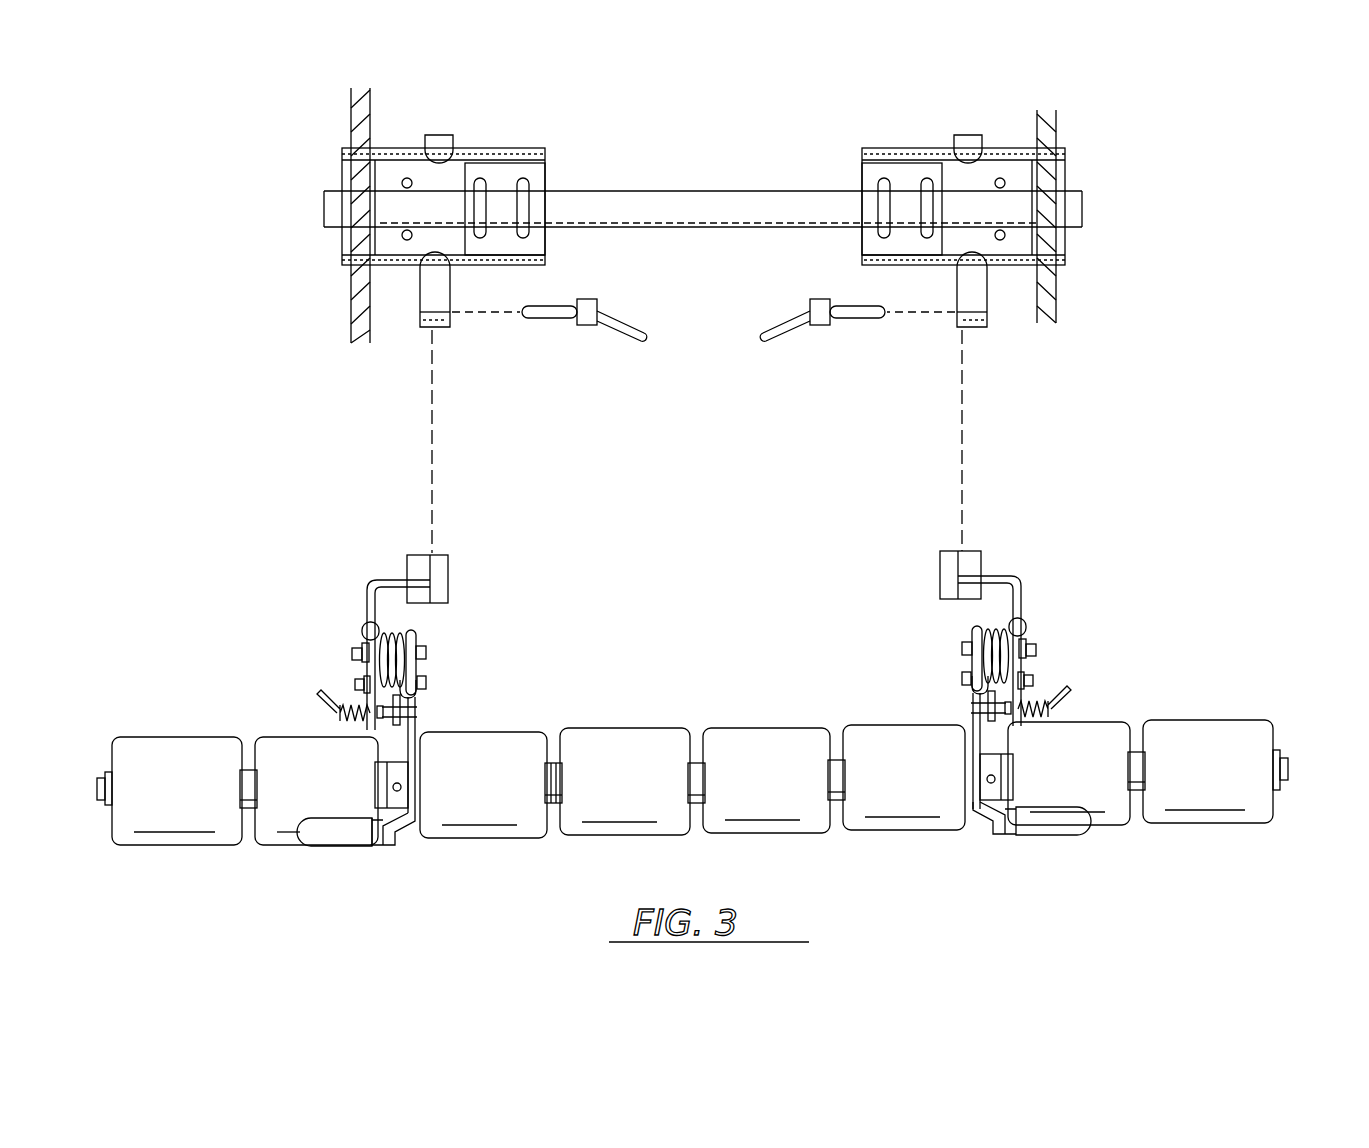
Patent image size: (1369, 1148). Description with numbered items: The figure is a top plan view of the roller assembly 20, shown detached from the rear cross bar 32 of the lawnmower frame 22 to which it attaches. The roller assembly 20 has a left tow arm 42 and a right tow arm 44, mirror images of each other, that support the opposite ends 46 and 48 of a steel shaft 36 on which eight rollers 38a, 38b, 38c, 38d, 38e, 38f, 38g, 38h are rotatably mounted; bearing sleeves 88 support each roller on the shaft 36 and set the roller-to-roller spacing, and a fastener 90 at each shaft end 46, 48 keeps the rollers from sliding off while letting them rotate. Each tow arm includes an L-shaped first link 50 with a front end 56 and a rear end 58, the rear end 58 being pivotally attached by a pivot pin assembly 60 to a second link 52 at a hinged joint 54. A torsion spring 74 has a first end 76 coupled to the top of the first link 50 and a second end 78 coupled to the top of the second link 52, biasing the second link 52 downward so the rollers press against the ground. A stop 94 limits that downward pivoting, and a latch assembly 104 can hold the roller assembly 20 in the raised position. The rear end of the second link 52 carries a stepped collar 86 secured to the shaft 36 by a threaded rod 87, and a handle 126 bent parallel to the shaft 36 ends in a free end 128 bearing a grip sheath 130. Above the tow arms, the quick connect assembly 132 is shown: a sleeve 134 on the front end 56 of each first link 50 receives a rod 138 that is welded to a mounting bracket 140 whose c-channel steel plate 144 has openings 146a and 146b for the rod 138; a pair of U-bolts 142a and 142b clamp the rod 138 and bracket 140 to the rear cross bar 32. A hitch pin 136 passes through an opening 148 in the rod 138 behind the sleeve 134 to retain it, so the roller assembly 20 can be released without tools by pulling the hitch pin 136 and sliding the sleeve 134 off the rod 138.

The roller assembly 20 is at (1082, 427).
The frame 22 is at (350, 118).
The rear cross bar 32 is at (640, 170).
The shaft 36 is at (697, 760).
The roller 38a is at (172, 836).
The roller 38b is at (283, 839).
The roller 38c is at (471, 827).
The roller 38d is at (614, 824).
The roller 38e is at (776, 822).
The roller 38f is at (905, 822).
The roller 38g is at (1113, 813).
The roller 38h is at (1229, 813).
The left tow arm 42 is at (702, 722).
The right tow arm 44 is at (1030, 580).
The shaft end 46 is at (401, 770).
The shaft end 48 is at (993, 757).
The first link 50 is at (682, 652).
The second link 52 is at (420, 722).
The hinged joint 54 is at (723, 645).
The front end of first link 56 is at (383, 578).
The rear end of first link 58 is at (372, 735).
The pivot pin assembly 60 is at (426, 645).
The torsion spring 74 is at (418, 635).
The first end of torsion spring 76 is at (361, 628).
The second end of torsion spring 78 is at (409, 697).
The stepped collar 86 is at (680, 773).
The threaded rod 87 is at (393, 788).
The bearing sleeve 88 is at (553, 762).
The fastener 90 is at (108, 813).
The stop 94 is at (429, 681).
The latch assembly 104 is at (309, 688).
The handle 126 is at (387, 834).
The free end of handle 128 is at (718, 863).
The sheath 130 is at (332, 848).
The quick connect assembly 132 is at (703, 331).
The sleeve 134 is at (450, 568).
The hitch pin 136 is at (562, 323).
The rod 138 is at (452, 291).
The mounting bracket 140 is at (541, 268).
The U-bolt 142a is at (481, 180).
The U-bolt 142b is at (524, 180).
The c-channel steel plate 144 is at (546, 148).
The opening 146a is at (434, 156).
The opening 146b is at (704, 297).
The opening 148 is at (451, 313).